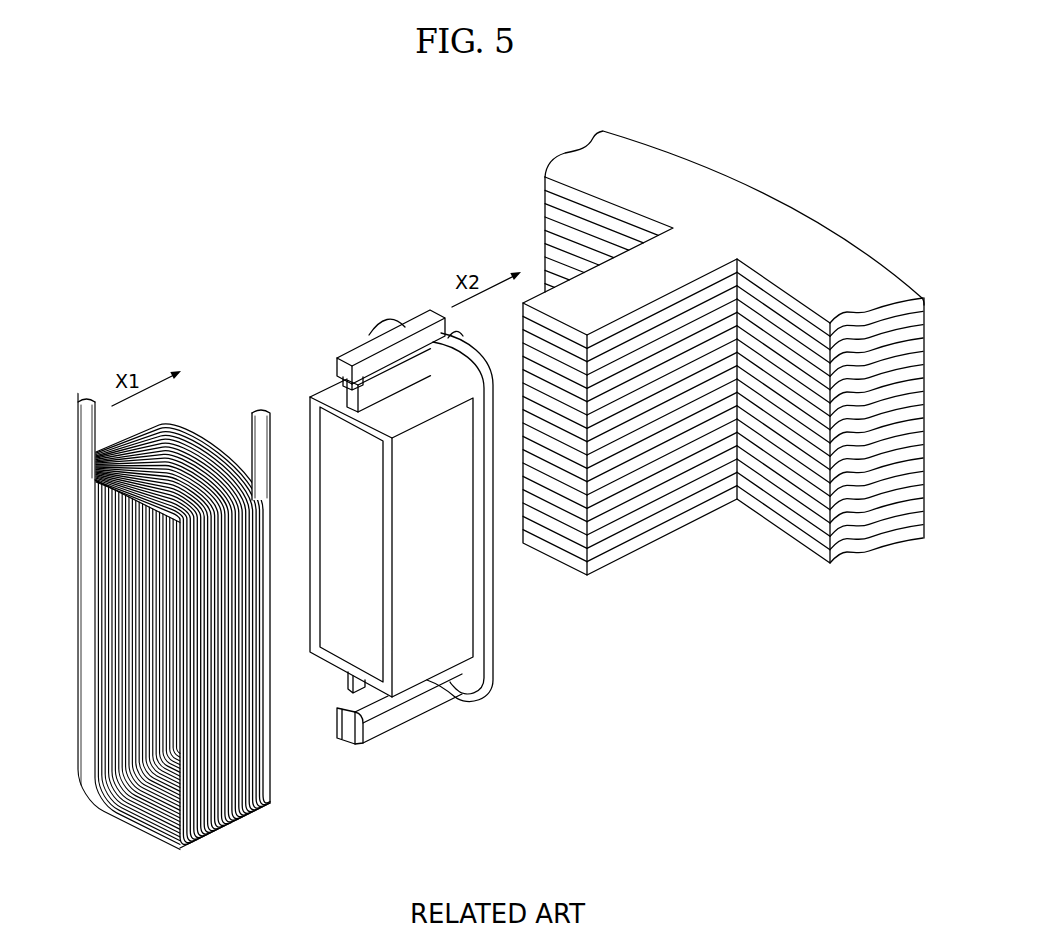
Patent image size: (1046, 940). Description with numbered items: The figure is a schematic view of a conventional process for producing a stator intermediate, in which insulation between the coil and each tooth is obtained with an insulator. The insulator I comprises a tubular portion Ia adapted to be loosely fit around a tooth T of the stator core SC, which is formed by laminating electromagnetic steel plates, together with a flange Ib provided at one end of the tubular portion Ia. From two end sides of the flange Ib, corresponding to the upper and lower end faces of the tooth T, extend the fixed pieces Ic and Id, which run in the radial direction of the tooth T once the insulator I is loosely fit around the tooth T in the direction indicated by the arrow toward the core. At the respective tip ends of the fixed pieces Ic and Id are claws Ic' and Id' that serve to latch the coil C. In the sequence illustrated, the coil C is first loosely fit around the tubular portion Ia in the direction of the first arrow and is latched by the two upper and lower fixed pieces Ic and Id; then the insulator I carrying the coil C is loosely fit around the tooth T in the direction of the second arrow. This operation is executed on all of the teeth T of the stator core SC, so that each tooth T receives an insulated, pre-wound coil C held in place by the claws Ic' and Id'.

The coil C is at (128, 805).
The insulator I is at (422, 537).
The tubular portion Ia is at (433, 623).
The flange Ib is at (470, 679).
The fixed piece Ic is at (391, 331).
The claw Ic' is at (342, 347).
The fixed piece Id is at (408, 719).
The claw Id' is at (326, 704).
The tooth T is at (653, 497).
The stator core SC is at (723, 411).